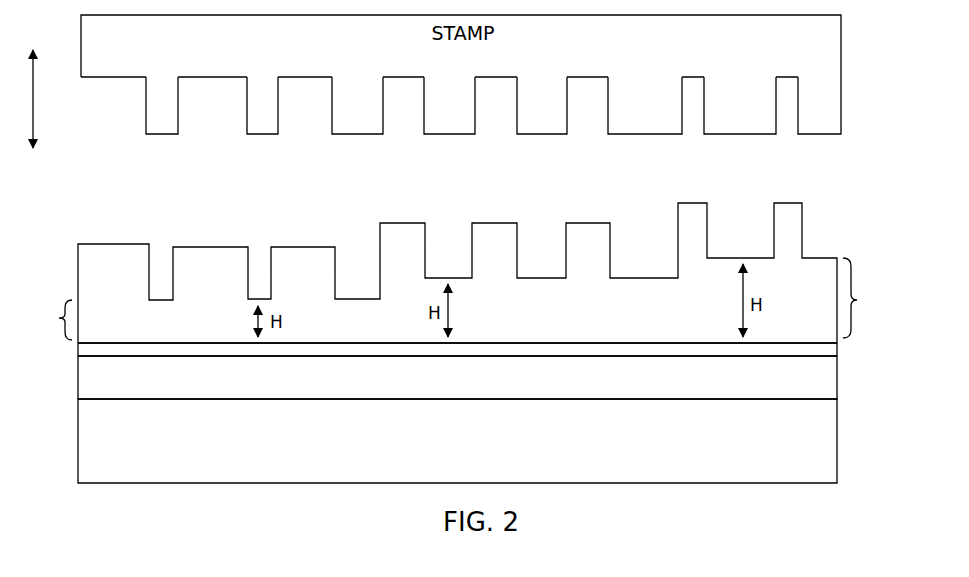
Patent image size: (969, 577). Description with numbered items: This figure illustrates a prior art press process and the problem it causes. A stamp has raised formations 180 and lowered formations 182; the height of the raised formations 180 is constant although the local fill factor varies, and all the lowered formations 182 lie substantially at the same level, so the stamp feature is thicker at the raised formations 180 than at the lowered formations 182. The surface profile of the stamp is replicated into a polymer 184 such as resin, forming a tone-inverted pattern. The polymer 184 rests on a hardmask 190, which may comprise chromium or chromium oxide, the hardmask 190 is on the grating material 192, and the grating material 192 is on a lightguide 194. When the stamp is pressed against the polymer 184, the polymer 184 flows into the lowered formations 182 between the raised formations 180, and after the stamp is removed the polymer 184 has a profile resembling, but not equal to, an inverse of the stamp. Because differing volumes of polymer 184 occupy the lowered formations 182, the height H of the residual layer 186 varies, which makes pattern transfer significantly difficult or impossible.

The raised formations 180 is at (160, 134).
The lowered formations 182 is at (105, 77).
The polymer 184 is at (515, 322).
The residual layer 186 is at (457, 299).
The hardmask 190 is at (837, 350).
The grating material 192 is at (416, 386).
The lightguide 194 is at (413, 451).